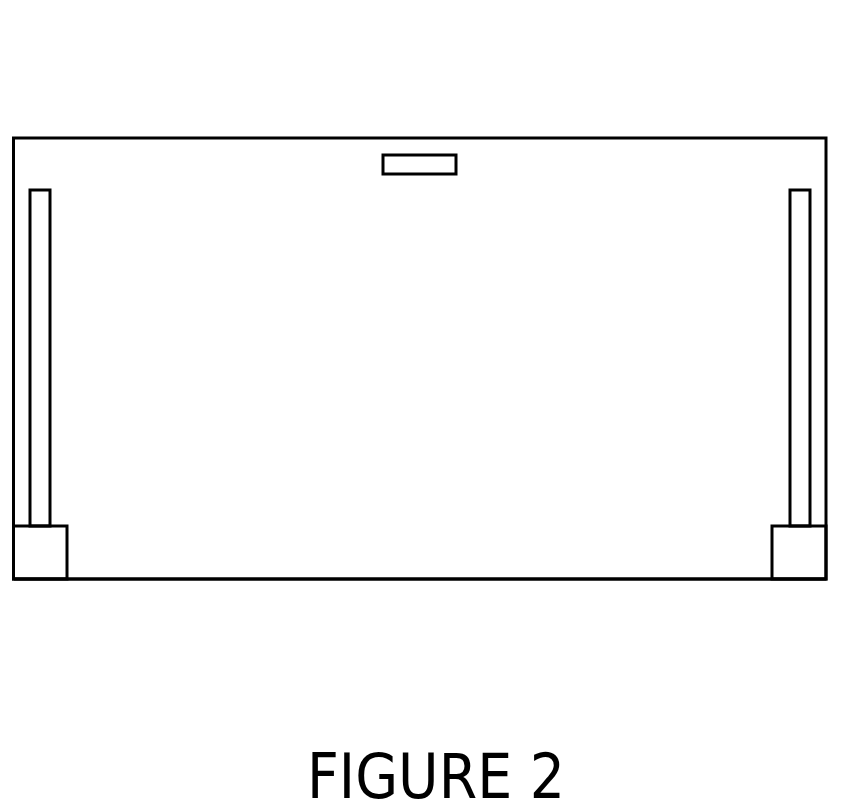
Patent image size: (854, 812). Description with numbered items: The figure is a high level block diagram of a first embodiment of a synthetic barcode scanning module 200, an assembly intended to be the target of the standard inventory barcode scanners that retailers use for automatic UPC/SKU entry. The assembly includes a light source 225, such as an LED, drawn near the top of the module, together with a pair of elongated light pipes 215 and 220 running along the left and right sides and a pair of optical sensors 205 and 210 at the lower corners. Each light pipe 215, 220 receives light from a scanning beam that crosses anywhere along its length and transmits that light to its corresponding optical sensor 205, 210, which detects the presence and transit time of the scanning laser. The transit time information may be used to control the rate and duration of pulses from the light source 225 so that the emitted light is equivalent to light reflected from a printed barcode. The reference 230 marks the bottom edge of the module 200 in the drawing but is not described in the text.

The synthetic barcode scanning module 200 is at (297, 115).
The optical sensor 205 is at (40, 579).
The optical sensor 210 is at (800, 579).
The light pipe 215 is at (40, 190).
The light pipe 220 is at (800, 190).
The light source 225 is at (419, 155).
The bottom edge 230 is at (420, 579).